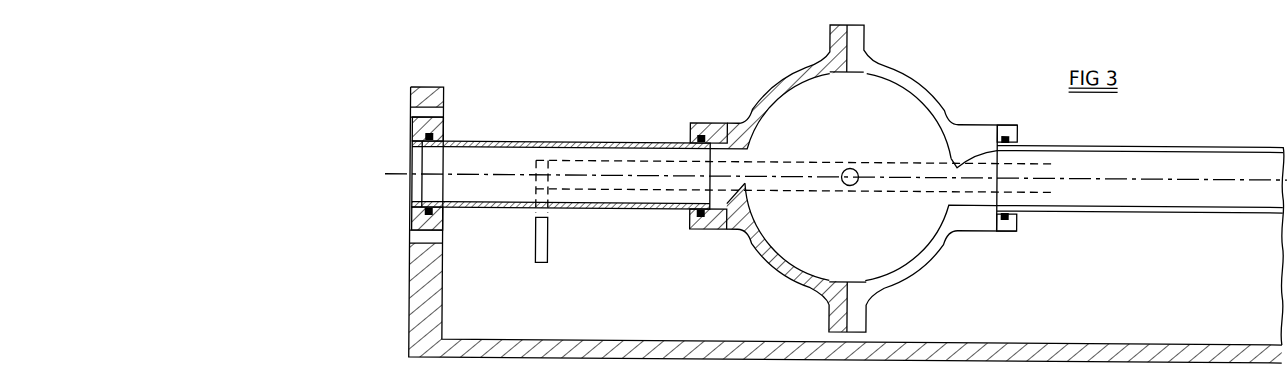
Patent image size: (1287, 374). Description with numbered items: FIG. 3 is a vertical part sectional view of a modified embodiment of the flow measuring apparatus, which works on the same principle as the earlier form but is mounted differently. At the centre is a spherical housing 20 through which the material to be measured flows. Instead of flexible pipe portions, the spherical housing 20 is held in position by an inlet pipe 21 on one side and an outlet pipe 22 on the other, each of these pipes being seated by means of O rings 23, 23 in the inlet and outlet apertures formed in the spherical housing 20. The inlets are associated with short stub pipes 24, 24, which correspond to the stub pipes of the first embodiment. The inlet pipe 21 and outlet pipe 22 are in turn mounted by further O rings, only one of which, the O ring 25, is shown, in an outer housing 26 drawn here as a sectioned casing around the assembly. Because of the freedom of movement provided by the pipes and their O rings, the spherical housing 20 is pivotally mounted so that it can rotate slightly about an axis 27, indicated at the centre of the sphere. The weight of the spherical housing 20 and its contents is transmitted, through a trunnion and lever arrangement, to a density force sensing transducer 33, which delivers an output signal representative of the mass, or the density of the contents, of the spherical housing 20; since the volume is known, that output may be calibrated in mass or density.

The spherical housing 20 is at (930, 97).
The inlet pipe 21 is at (543, 144).
The outlet pipe 22 is at (1087, 146).
The O rings 23 is at (693, 140).
The short stub pipes 24 is at (953, 163).
The O ring 25 is at (443, 121).
The housing 26 is at (418, 315).
The axis 27 is at (852, 186).
The density force sensing transducer 33 is at (548, 242).